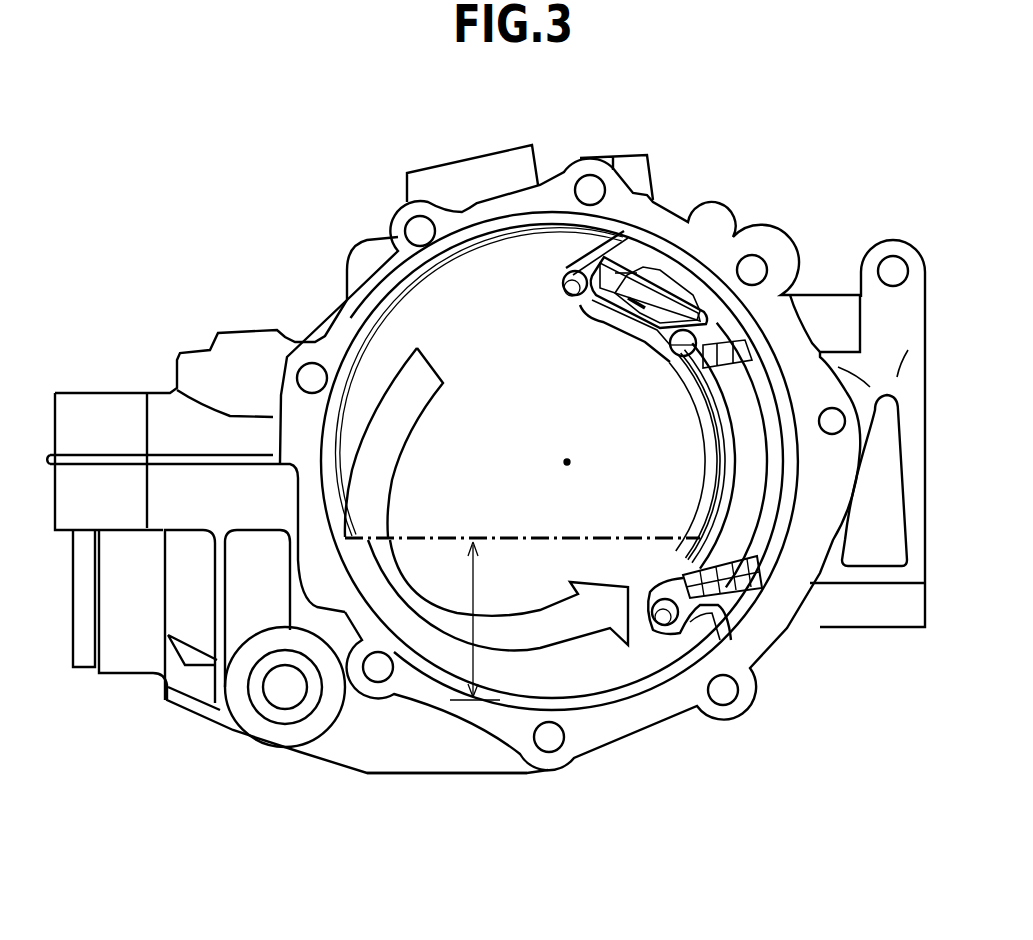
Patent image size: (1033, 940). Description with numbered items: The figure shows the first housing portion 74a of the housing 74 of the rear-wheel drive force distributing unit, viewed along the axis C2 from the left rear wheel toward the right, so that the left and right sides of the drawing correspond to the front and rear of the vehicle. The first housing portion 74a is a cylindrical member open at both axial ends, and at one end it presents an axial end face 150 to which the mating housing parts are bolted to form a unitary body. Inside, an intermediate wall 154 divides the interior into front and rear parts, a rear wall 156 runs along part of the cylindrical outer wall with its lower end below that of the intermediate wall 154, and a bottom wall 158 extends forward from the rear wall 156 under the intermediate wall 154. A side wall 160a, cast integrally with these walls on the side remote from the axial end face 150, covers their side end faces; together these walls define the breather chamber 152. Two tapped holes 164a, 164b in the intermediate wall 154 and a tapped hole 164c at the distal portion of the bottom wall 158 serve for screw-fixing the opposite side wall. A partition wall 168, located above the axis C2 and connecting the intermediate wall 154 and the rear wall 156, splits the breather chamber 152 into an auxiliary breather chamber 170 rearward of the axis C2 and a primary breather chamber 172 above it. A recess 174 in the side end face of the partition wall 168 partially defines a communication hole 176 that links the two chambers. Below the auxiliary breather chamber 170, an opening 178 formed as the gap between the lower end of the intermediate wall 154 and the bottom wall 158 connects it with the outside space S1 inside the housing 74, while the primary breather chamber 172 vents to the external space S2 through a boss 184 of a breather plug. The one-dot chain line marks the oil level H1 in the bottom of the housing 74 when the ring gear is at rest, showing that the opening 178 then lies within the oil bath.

The housing 74 is at (453, 429).
The first housing portion 74a is at (316, 158).
The axial end face 150 is at (600, 727).
The breather chamber 152 is at (672, 385).
The intermediate wall 154 is at (717, 443).
The rear wall 156 is at (797, 447).
The bottom wall 158 is at (703, 603).
The side wall 160a is at (753, 480).
The tapped hole 164a is at (557, 300).
The tapped hole 164b is at (655, 350).
The tapped hole 164c is at (653, 625).
The partition wall 168 is at (705, 338).
The auxiliary breather chamber 170 is at (742, 456).
The primary breather chamber 172 is at (585, 327).
The recess 174 is at (745, 315).
The communication hole 176 is at (893, 271).
The opening 178 is at (682, 559).
The boss 184 is at (643, 173).
The outside space S1 is at (506, 475).
The external space S2 is at (285, 262).
The axis C2 is at (569, 460).
The level H1 is at (478, 621).